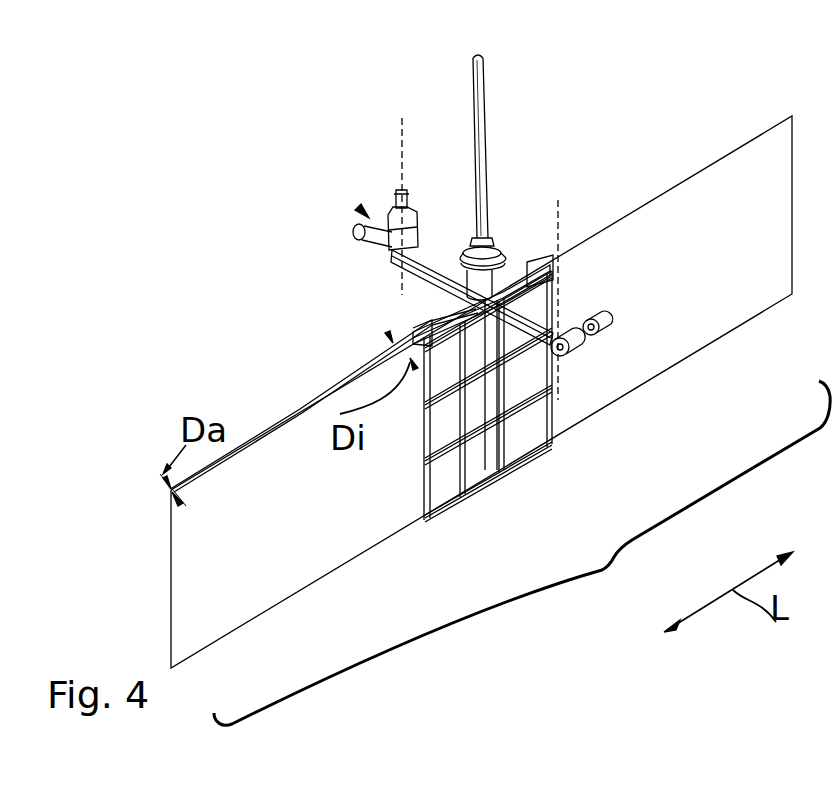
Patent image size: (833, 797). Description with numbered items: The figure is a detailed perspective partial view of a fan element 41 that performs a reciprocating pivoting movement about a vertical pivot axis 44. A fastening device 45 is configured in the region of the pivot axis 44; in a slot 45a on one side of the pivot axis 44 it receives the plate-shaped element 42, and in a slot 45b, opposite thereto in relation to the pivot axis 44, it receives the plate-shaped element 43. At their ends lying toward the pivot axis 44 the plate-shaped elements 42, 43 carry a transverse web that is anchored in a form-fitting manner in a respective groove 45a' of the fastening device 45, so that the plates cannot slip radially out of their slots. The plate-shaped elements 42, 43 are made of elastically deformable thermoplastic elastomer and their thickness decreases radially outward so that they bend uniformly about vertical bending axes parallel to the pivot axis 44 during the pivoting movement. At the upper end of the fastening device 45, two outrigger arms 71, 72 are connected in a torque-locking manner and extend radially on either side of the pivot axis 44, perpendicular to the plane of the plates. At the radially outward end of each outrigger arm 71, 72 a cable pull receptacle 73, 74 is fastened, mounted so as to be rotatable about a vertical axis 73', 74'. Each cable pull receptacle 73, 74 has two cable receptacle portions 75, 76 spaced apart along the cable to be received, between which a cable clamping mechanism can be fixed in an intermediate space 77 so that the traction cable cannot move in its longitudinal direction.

The fan element 41 is at (522, 553).
The plate-shaped element 42 is at (323, 532).
The plate-shaped element 43 is at (666, 332).
The pivot axis 44 is at (488, 162).
The fastening device 45 is at (492, 450).
The slot 45a is at (325, 400).
The groove 45a' is at (334, 298).
The slot 45b is at (525, 310).
The outrigger arm 71 is at (462, 264).
The outrigger arm 72 is at (522, 310).
The cable pull receptacle 73 is at (366, 198).
The vertical axis 73' is at (368, 192).
The cable pull receptacle 74 is at (613, 414).
The vertical axis 74' is at (625, 259).
The cable receptacle portion 75 is at (354, 232).
The cable receptacle portion 76 is at (403, 198).
The intermediate space 77 is at (362, 212).